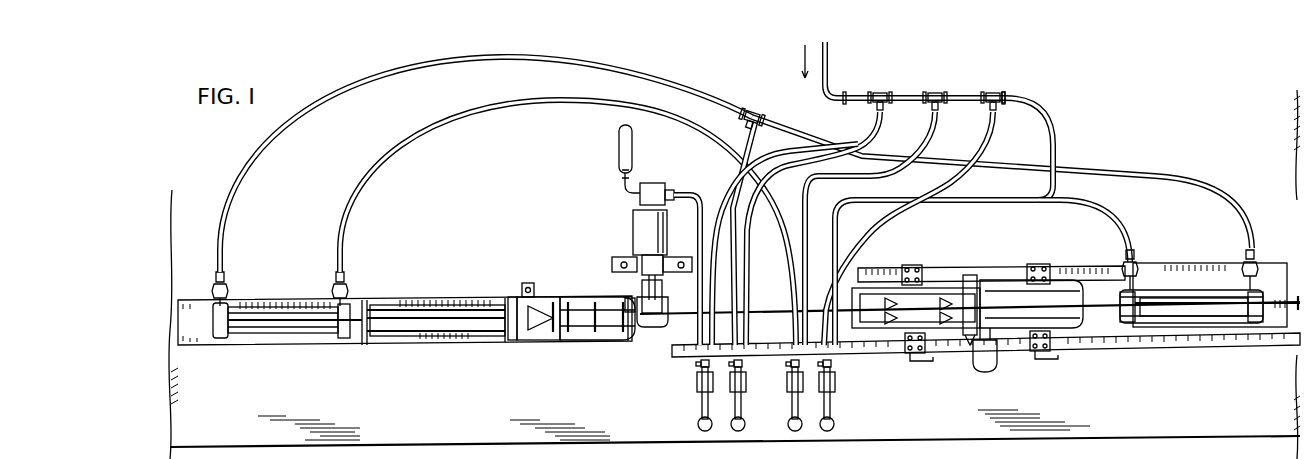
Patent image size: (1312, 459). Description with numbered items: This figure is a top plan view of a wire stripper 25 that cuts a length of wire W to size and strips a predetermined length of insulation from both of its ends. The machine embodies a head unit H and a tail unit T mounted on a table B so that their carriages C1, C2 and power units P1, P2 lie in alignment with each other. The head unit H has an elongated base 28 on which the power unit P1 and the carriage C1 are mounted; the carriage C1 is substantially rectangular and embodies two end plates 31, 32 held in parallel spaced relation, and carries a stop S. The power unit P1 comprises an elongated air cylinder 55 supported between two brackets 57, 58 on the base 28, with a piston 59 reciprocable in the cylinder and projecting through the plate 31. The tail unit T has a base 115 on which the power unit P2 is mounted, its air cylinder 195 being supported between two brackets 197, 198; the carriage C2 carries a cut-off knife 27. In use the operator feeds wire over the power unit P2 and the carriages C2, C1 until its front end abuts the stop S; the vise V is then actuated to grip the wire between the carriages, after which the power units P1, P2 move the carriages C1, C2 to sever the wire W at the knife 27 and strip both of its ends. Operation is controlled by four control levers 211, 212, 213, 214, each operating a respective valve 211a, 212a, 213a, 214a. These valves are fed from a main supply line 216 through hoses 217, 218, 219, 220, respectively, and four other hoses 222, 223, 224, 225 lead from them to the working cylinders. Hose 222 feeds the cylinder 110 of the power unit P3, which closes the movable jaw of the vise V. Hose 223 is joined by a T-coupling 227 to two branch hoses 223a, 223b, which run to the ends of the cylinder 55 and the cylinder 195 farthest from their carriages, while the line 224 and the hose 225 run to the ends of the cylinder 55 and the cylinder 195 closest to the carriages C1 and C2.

The power unit P1 is at (278, 305).
The air cylinder 55 is at (318, 305).
The bracket 57 is at (227, 343).
The bracket 58 is at (340, 343).
The piston 59 is at (407, 318).
The elongated base 28 is at (430, 302).
The end plate 31 is at (508, 344).
The carriage C1 is at (511, 295).
The stop S is at (552, 300).
The head unit H is at (580, 296).
The end plate 32 is at (630, 300).
The vise V is at (655, 328).
The cylinder 110 is at (633, 238).
The power unit P3 is at (651, 181).
The hose 222 is at (699, 240).
The hose 217 is at (722, 200).
The hose 218 is at (770, 222).
The hose 219 is at (820, 178).
The hose 220 is at (845, 198).
The hose 223 is at (738, 262).
The hose 223a is at (672, 86).
The hose 223b is at (822, 128).
The line 224 is at (790, 244).
The hose 225 is at (866, 236).
The T-coupling 227 is at (755, 111).
The main supply line 216 is at (830, 55).
The wire W is at (770, 311).
The cut-off knife 27 is at (966, 298).
The carriage C2 is at (1000, 283).
The tail unit T is at (1071, 266).
The wire stripper 25 is at (1179, 280).
The power unit P2 is at (1193, 290).
The base 115 is at (1275, 268).
The bracket 197 is at (1132, 328).
The air cylinder 195 is at (1208, 314).
The bracket 198 is at (1248, 326).
The control lever 211 is at (703, 432).
The control lever 212 is at (735, 432).
The control lever 213 is at (793, 432).
The control lever 214 is at (824, 432).
The valve 211a is at (697, 382).
The valve 212a is at (746, 380).
The valve 213a is at (782, 398).
The valve 214a is at (836, 382).
The table B is at (1166, 408).